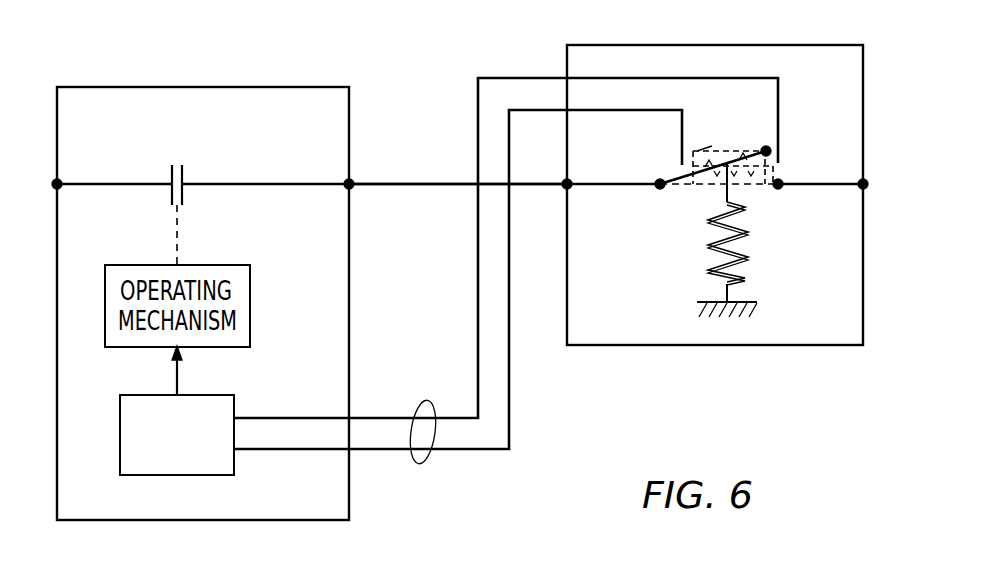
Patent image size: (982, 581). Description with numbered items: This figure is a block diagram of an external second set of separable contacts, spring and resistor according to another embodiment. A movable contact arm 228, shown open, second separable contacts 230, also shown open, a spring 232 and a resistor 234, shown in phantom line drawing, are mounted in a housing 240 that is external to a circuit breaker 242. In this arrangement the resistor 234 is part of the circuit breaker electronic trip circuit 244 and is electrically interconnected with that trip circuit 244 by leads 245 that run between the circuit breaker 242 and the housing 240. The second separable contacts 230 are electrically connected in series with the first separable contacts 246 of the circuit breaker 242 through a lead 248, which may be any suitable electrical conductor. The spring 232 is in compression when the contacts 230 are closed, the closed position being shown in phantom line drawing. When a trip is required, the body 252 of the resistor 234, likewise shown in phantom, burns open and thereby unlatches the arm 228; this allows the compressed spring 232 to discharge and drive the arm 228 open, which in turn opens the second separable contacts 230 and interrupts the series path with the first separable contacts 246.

The movable contact arm 228 is at (680, 172).
The second separable contacts 230 is at (789, 171).
The spring 232 is at (745, 238).
The resistor 234 is at (697, 150).
The housing 240 is at (780, 346).
The circuit breaker 242 is at (216, 524).
The electronic trip circuit 244 is at (205, 476).
The leads 245 is at (425, 466).
The first separable contacts 246 is at (176, 164).
The lead 248 is at (540, 187).
The body 252 is at (735, 150).